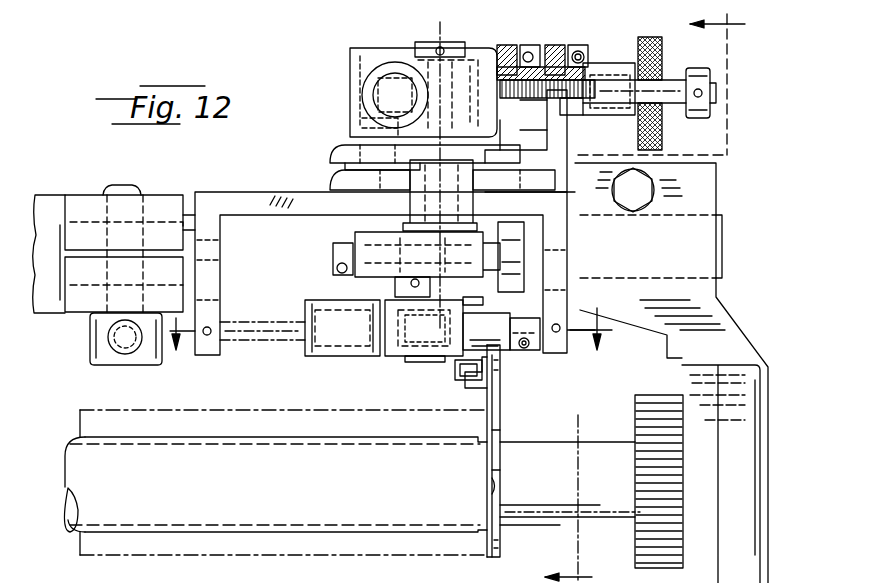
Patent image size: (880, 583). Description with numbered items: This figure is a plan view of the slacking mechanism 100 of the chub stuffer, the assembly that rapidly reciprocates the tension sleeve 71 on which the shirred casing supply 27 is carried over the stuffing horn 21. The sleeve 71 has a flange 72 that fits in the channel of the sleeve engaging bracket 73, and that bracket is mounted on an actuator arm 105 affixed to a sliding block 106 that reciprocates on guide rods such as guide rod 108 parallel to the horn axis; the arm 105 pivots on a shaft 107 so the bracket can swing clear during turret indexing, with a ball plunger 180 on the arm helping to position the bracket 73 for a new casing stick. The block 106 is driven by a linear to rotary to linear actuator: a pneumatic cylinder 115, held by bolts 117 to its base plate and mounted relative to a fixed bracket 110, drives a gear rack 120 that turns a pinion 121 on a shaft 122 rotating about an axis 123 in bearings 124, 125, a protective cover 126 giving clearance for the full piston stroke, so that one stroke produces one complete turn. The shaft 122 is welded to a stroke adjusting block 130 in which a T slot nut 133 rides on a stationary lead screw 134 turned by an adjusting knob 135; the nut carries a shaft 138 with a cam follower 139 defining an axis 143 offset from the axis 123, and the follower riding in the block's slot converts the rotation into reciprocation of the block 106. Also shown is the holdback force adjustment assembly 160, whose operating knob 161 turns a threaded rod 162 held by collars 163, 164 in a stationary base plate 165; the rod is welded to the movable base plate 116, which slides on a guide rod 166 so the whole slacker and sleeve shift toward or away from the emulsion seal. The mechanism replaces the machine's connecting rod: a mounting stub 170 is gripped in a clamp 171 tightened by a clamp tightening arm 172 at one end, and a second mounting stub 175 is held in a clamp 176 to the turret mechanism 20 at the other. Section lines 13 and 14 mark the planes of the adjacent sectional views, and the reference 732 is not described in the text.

The section line 13- 13 is at (653, 298).
The section line 14- 14 is at (383, 318).
The turret mechanism 20 is at (694, 365).
The stuffing horn 21 is at (537, 528).
The shirred casing supply 27 is at (172, 410).
The tension sleeve 71 is at (300, 440).
The flange 72 is at (500, 462).
The sleeve engaging bracket 73 is at (502, 424).
The slacking mechanism 100 is at (510, 370).
The actuator arm 105 is at (468, 390).
The sliding block 106 is at (308, 300).
The shaft 107 is at (538, 345).
The guide rod 108 is at (275, 342).
The fixed bracket 110 is at (305, 370).
The pneumatic cylinder 115 is at (352, 96).
The movable base plate 116 is at (335, 152).
The bolts 117 is at (362, 128).
The gear rack 120 is at (362, 74).
The pinion 121 is at (386, 46).
The shaft 122 is at (436, 42).
The axis 123 is at (410, 206).
The bearing 124 is at (446, 48).
The bearing 125 is at (470, 155).
The protective cover 126 is at (373, 92).
The stroke adjusting block 130 is at (356, 242).
The T slot nut 133 is at (395, 287).
The lead screw 134 is at (333, 258).
The adjusting knob 135 is at (524, 258).
The shaft 138 is at (430, 290).
The cam follower 139 is at (466, 307).
The axis 143 is at (418, 362).
The holdback force adjustment assembly 160 is at (692, 60).
The operating knob 161 is at (656, 44).
The threaded rod 162 is at (506, 45).
The collar 163 is at (552, 45).
The collar 164 is at (596, 66).
The stationary base plate 165 is at (560, 45).
The guide rod 166 is at (682, 106).
The mounting stub 170 is at (193, 190).
The clamp 171 is at (82, 190).
The clamp tightening arm 172 is at (90, 345).
The mounting stub 175 is at (722, 240).
The clamp 176 is at (706, 185).
The ball plunger 180 is at (455, 375).
The plate notch 732 is at (490, 486).